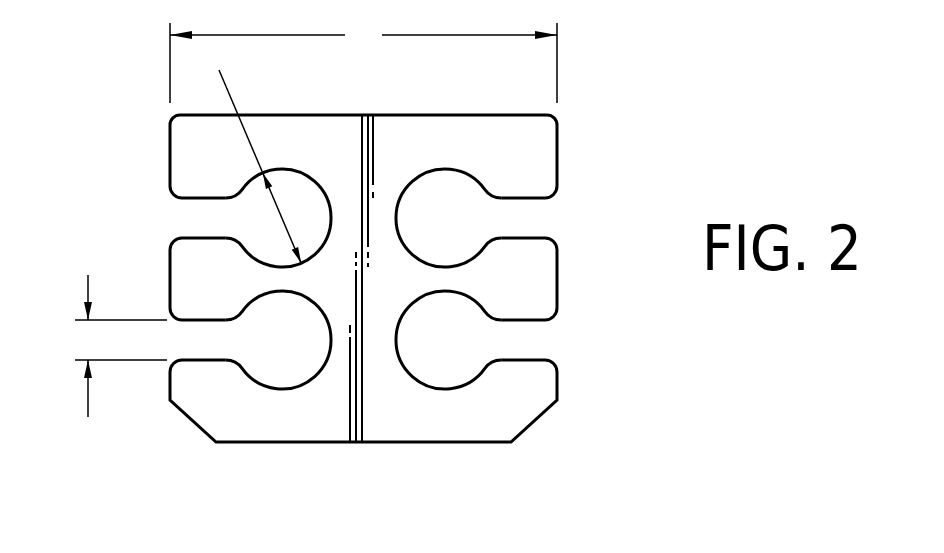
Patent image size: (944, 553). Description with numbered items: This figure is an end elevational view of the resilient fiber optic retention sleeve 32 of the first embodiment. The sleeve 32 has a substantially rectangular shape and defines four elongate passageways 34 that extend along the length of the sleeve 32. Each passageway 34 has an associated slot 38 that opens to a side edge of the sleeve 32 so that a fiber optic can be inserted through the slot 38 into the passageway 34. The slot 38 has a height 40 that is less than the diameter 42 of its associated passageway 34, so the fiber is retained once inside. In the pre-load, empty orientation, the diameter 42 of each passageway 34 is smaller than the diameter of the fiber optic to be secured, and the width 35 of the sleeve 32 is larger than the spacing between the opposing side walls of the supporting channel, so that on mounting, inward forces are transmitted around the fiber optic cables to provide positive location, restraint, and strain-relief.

The sleeve 32 is at (633, 85).
The elongate passageways 34 is at (290, 187).
The width of the sleeve 35 is at (363, 63).
The slot 38 is at (188, 219).
The height of the slot 40 is at (88, 417).
The diameter of the passageway 42 is at (219, 70).